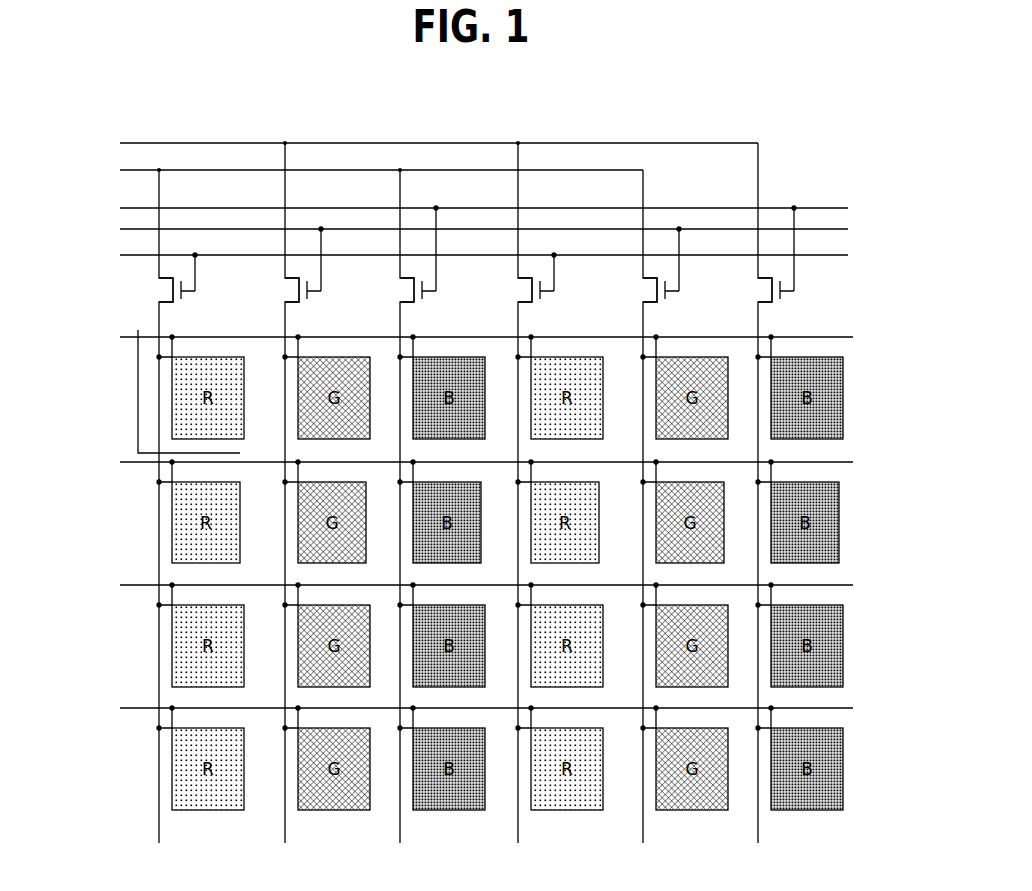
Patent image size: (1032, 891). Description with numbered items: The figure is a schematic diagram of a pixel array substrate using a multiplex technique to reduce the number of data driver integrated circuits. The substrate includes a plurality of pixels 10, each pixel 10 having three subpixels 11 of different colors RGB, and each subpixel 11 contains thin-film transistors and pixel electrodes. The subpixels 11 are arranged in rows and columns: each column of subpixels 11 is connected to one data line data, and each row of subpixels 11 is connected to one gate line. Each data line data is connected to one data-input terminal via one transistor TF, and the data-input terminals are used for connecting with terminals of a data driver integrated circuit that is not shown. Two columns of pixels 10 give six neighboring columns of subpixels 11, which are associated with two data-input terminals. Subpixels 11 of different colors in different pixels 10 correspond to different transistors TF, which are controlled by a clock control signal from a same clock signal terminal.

The pixel 10 is at (138, 372).
The subpixel 11 is at (187, 423).
The transistor TF is at (466, 254).
The data line data is at (460, 504).